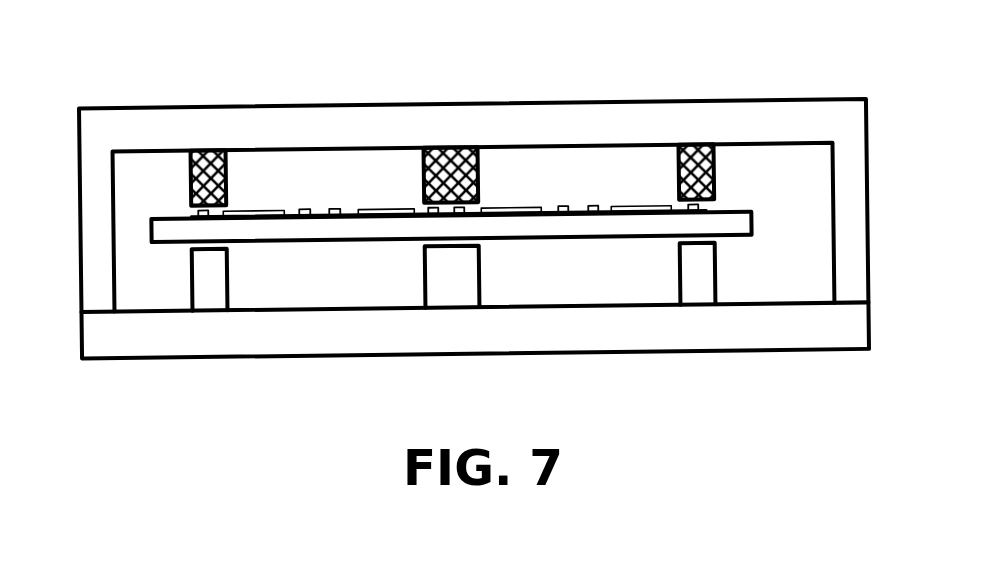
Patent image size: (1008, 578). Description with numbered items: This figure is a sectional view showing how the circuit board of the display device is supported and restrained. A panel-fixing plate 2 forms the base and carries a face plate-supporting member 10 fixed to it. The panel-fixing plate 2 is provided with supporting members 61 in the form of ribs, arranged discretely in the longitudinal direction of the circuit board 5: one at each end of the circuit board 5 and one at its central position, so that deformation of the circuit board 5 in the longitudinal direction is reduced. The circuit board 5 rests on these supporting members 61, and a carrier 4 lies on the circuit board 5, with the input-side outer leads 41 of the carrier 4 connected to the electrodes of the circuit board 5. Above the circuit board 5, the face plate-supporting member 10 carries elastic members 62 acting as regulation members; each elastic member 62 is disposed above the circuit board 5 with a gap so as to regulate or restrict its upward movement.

The face plate-supporting member 10 is at (805, 124).
The panel-fixing plate 2 is at (633, 327).
The supporting member 61 is at (215, 283).
The elastic member 62 is at (225, 183).
The circuit board 5 is at (735, 212).
The carrier 4 is at (639, 208).
The input-side outer leads 41 is at (297, 211).